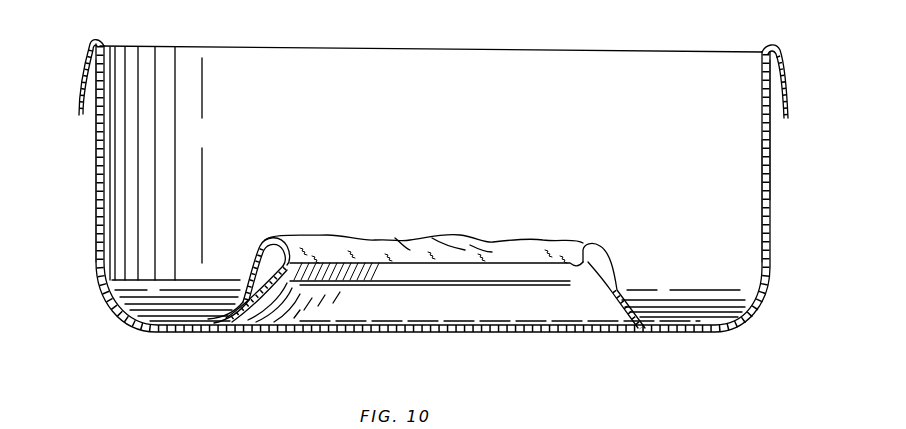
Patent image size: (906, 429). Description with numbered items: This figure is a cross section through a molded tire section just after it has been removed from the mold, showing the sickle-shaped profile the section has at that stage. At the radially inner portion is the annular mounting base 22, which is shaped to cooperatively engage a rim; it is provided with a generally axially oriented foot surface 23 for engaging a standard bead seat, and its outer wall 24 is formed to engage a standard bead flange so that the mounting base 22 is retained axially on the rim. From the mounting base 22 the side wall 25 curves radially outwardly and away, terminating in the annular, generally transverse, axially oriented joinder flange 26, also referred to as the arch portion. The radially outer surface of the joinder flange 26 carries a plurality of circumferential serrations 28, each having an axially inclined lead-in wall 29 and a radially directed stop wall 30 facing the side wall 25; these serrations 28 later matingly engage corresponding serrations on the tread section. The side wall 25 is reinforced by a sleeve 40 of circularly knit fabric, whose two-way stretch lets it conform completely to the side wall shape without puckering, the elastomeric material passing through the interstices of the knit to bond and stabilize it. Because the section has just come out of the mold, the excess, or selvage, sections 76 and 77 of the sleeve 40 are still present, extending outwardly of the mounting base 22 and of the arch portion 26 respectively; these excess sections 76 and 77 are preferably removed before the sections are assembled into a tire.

The mounting base 22 is at (284, 287).
The foot surface 23 is at (568, 272).
The outer wall 24 is at (590, 293).
The side wall 25 is at (170, 328).
The joinder flange 26 is at (97, 130).
The serrations 28 is at (93, 192).
The lead-in wall 29 is at (775, 148).
The stop wall 30 is at (773, 187).
The sleeve 40 is at (787, 78).
The excess section 76 is at (265, 240).
The excess section 77 is at (87, 60).